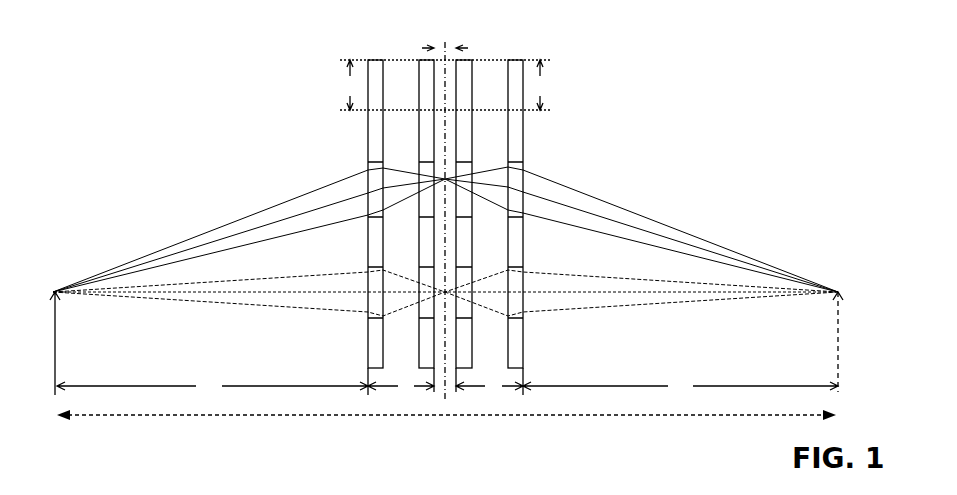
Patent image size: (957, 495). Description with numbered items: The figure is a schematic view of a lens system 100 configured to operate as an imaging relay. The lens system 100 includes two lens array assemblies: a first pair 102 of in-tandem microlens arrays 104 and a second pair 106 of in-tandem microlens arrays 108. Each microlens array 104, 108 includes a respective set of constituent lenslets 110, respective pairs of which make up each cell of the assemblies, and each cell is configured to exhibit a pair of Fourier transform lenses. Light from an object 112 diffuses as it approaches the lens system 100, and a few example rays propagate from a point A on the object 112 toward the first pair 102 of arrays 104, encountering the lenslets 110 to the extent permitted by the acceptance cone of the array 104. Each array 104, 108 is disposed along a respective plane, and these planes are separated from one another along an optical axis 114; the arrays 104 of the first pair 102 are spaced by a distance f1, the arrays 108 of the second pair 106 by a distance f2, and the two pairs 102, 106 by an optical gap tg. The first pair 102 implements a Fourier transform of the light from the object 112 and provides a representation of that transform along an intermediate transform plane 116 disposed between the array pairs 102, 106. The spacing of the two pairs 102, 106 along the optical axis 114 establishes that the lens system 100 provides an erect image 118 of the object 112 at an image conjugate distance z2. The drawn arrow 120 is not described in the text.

The lens system 100 is at (592, 31).
The first pair of in-tandem microlens arrays 102 is at (368, 42).
The microlens array 104 is at (368, 122).
The second pair of in-tandem microlens arrays 106 is at (456, 42).
The microlens array 108 is at (472, 99).
The lenslets 110 is at (375, 218).
The object 112 is at (57, 320).
The optical axis 114 is at (368, 415).
The intermediate transform plane 116 is at (445, 402).
The erect image 118 is at (836, 318).
The incident light direction 120 is at (444, 22).